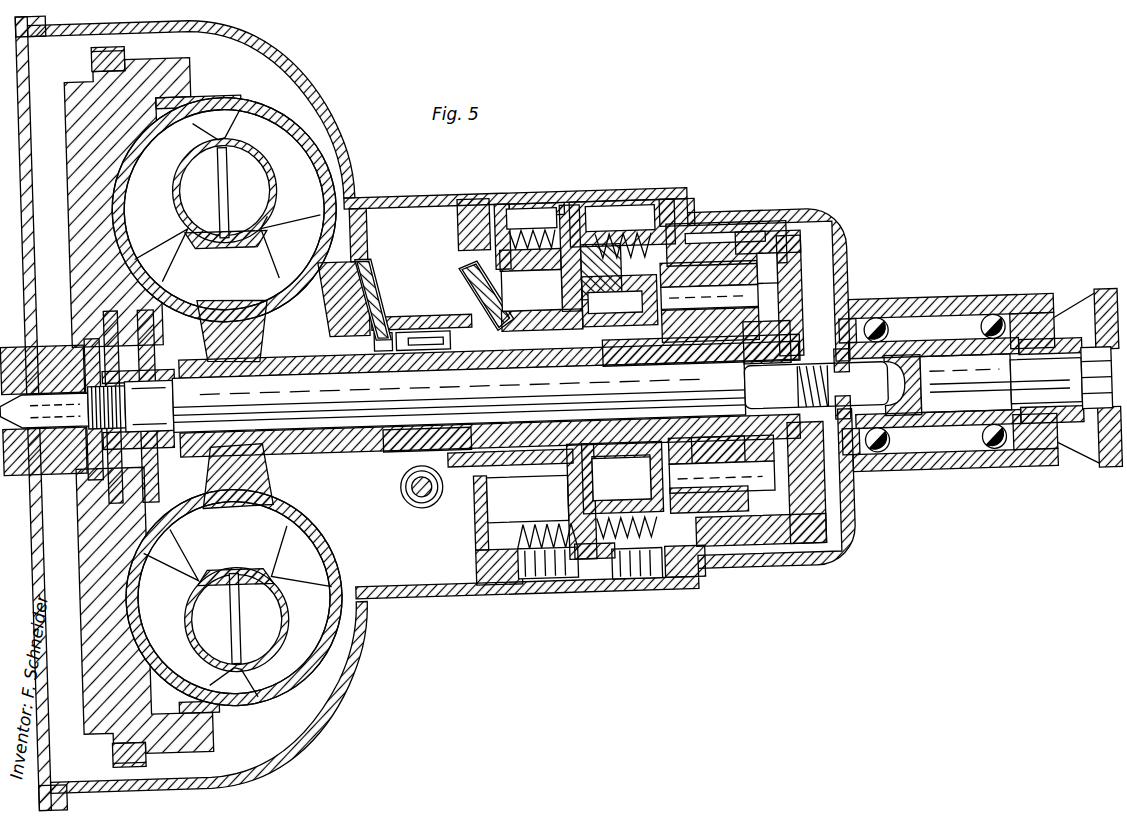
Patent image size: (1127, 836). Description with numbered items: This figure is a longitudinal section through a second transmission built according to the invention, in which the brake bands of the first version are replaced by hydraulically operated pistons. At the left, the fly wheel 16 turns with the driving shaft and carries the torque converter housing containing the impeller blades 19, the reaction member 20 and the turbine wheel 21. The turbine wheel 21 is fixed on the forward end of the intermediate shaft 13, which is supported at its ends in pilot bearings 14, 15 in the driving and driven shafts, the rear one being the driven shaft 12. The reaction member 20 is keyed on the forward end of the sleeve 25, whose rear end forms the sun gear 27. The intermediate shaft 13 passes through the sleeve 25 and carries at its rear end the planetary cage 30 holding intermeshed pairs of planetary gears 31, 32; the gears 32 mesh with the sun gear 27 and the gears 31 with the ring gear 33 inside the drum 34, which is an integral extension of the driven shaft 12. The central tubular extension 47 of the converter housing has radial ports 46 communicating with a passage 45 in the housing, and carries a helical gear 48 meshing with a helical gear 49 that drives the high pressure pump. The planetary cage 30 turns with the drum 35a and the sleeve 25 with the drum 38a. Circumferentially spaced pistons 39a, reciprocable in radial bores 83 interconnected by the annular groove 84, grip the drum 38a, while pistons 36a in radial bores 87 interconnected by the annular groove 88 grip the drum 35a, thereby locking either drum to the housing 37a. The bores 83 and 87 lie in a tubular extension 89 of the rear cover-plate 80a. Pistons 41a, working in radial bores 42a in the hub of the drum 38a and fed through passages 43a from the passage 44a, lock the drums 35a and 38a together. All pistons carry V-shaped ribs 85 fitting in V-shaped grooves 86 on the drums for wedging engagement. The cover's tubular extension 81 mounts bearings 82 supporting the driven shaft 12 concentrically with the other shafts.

The driven shaft 12 is at (952, 412).
The intermediate shaft 13 is at (400, 452).
The pilot bearing 14 is at (63, 410).
The pilot bearing 15 is at (905, 366).
The fly wheel 16 is at (78, 178).
The impeller blades 19 is at (306, 142).
The reaction member 20 is at (268, 254).
The turbine wheel 21 is at (205, 122).
The sleeve 25 is at (386, 332).
The sun gear 27 is at (762, 356).
The planetary cage 30 is at (765, 494).
The planetary gears 31 is at (769, 268).
The planetary gears 32 is at (712, 442).
The ring gear 33 is at (745, 256).
The drum 34 is at (798, 280).
The drum 35a is at (711, 235).
The hydraulically operable pistons 36a is at (665, 205).
The housing 37a is at (740, 219).
The drum 38a is at (540, 259).
The hydraulically operable pistons 39a is at (556, 224).
The hydraulically operable pistons 41a is at (625, 358).
The radial bores 42a is at (709, 301).
The passages 43a is at (550, 358).
The passage 44a is at (470, 290).
The passage 45 is at (372, 268).
The radial ports 46 is at (423, 401).
The tubular extension 47 is at (345, 440).
The helical gear 48 is at (426, 334).
The helical gear 49 is at (419, 506).
The rear cover-plate 80a is at (846, 232).
The tubular extension 81 is at (1003, 312).
The bearings 82 is at (965, 325).
The radial bores 83 is at (480, 204).
The annular groove 84 is at (555, 206).
The V-shaped ribs 85 is at (500, 233).
The V-shaped grooves 86 is at (560, 281).
The radial bores 87 is at (700, 214).
The annular groove 88 is at (600, 210).
The tubular extension 89 is at (584, 580).